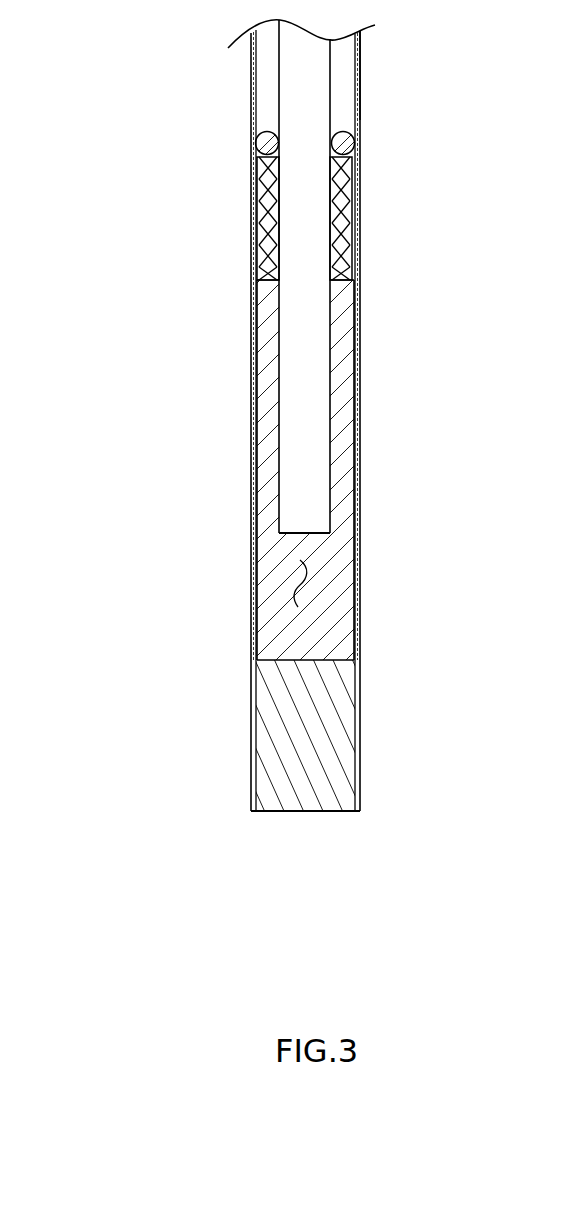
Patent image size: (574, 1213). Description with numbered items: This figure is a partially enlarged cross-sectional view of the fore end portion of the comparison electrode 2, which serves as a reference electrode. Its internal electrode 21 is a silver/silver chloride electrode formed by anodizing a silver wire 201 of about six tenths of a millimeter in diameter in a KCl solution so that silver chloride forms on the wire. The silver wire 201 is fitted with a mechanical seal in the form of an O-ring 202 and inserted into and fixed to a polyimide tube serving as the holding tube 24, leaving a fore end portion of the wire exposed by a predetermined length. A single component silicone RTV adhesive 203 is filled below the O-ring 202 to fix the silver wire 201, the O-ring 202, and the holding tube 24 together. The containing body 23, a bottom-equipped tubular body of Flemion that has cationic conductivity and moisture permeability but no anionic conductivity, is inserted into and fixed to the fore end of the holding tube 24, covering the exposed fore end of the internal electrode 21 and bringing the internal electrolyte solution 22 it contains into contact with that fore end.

The comparison electrode 2 is at (150, 191).
The internal electrode 21 is at (279, 423).
The internal electrolyte solution 22 is at (300, 582).
The containing body 23 is at (357, 515).
The holding tube 24 is at (361, 70).
The silver wire 201 is at (280, 100).
The O-ring 202 is at (358, 128).
The silicone RTV adhesive 203 is at (358, 220).